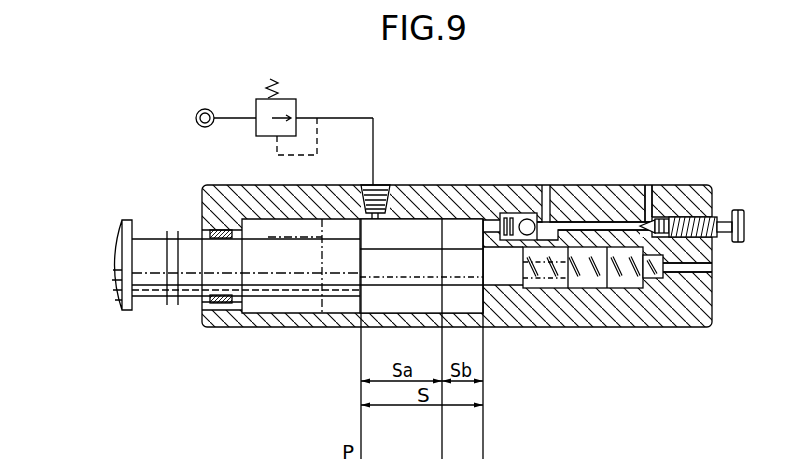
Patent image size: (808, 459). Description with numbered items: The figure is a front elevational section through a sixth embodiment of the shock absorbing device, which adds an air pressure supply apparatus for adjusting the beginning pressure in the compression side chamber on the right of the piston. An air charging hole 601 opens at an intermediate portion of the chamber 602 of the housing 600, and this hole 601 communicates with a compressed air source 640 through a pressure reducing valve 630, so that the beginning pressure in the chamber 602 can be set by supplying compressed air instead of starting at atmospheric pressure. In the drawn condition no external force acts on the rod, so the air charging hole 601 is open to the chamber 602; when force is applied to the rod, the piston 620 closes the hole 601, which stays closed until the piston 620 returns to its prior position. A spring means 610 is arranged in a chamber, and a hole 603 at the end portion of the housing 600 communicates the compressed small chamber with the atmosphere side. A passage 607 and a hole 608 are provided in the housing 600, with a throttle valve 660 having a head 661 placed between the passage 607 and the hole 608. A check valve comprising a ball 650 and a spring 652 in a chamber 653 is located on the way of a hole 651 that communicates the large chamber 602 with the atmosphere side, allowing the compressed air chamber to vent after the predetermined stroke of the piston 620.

The housing 600 is at (452, 205).
The air charging hole 601 is at (382, 192).
The chamber 602 is at (470, 230).
The hole 603 is at (703, 267).
The passage 607 is at (615, 226).
The hole 608 is at (651, 185).
The spring means 610 is at (618, 262).
The piston 620 is at (282, 287).
The pressure reducing valve 630 is at (292, 93).
The compressed air source 640 is at (210, 107).
The ball 650 is at (533, 218).
The hole 651 is at (552, 222).
The spring 652 is at (512, 212).
The chamber 653 is at (512, 215).
The throttle valve 660 is at (655, 222).
The head 661 is at (745, 215).